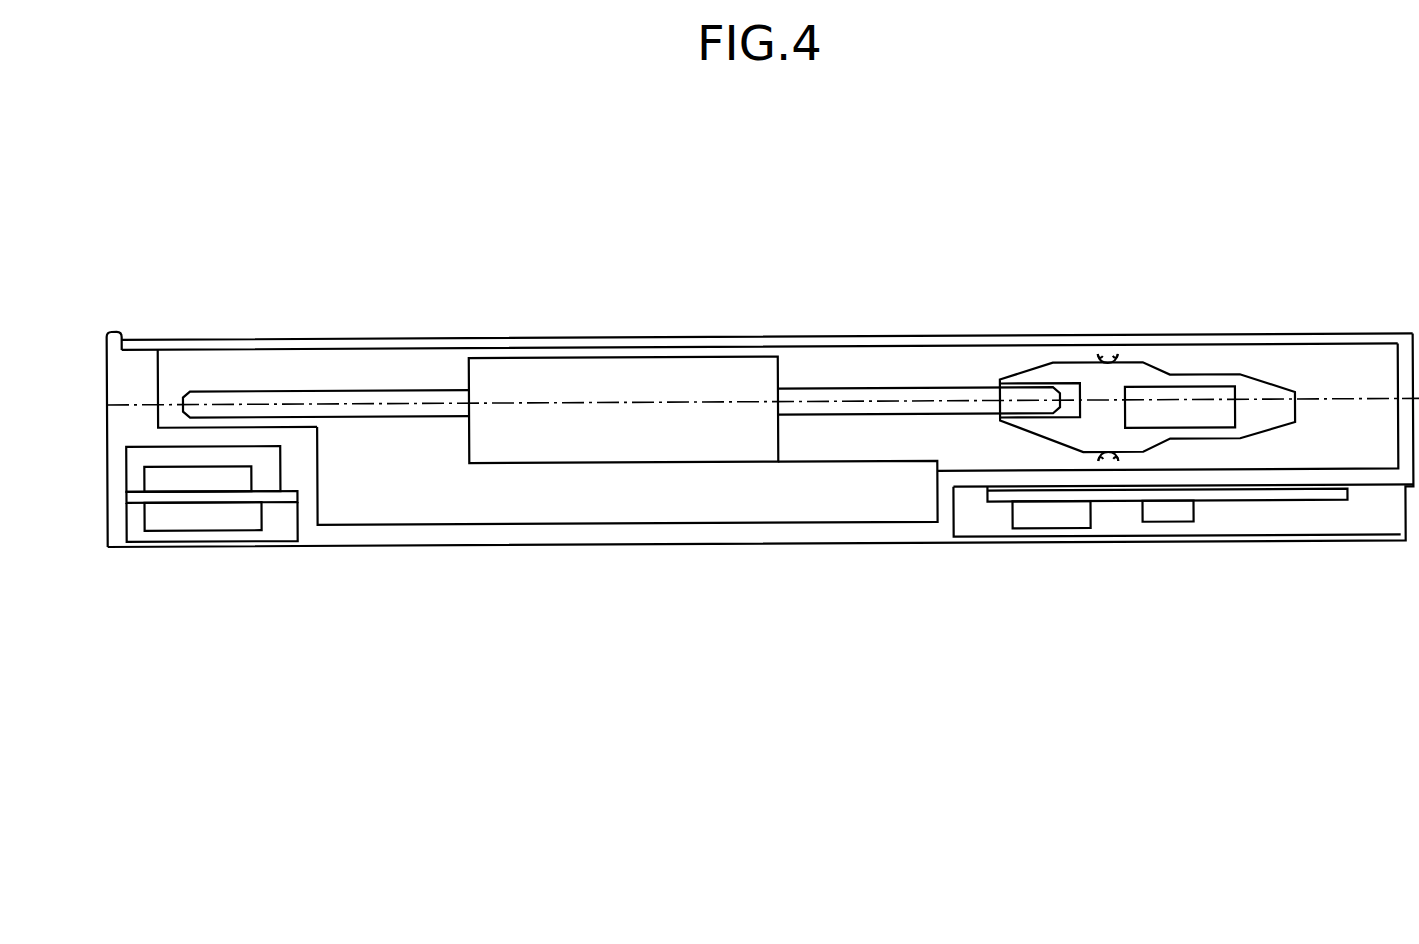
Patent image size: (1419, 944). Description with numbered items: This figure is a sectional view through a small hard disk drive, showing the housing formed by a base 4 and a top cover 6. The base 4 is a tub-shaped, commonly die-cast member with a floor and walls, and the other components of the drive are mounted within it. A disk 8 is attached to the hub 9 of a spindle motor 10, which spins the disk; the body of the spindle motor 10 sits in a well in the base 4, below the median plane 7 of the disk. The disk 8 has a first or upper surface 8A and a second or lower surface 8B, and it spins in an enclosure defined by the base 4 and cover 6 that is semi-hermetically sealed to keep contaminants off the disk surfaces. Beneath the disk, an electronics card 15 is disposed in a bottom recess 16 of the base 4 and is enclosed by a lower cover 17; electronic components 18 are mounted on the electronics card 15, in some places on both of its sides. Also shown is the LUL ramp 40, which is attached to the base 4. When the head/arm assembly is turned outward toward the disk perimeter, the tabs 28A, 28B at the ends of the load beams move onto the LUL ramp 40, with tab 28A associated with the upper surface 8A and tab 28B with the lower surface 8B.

The base 4 is at (140, 363).
The top cover 6 is at (295, 342).
The median plane 7 is at (1359, 398).
The disk 8 is at (395, 395).
The upper surface 8A is at (915, 391).
The lower surface 8B is at (913, 420).
The hub 9 is at (640, 387).
The spindle motor 10 is at (633, 503).
The electronics card 15 is at (272, 497).
The bottom recess 16 is at (1298, 518).
The lower cover 17 is at (1165, 543).
The electronic components 18 is at (175, 478).
The tab 28A is at (1108, 358).
The tab 28B is at (1108, 466).
The LUL ramp 40 is at (1172, 381).